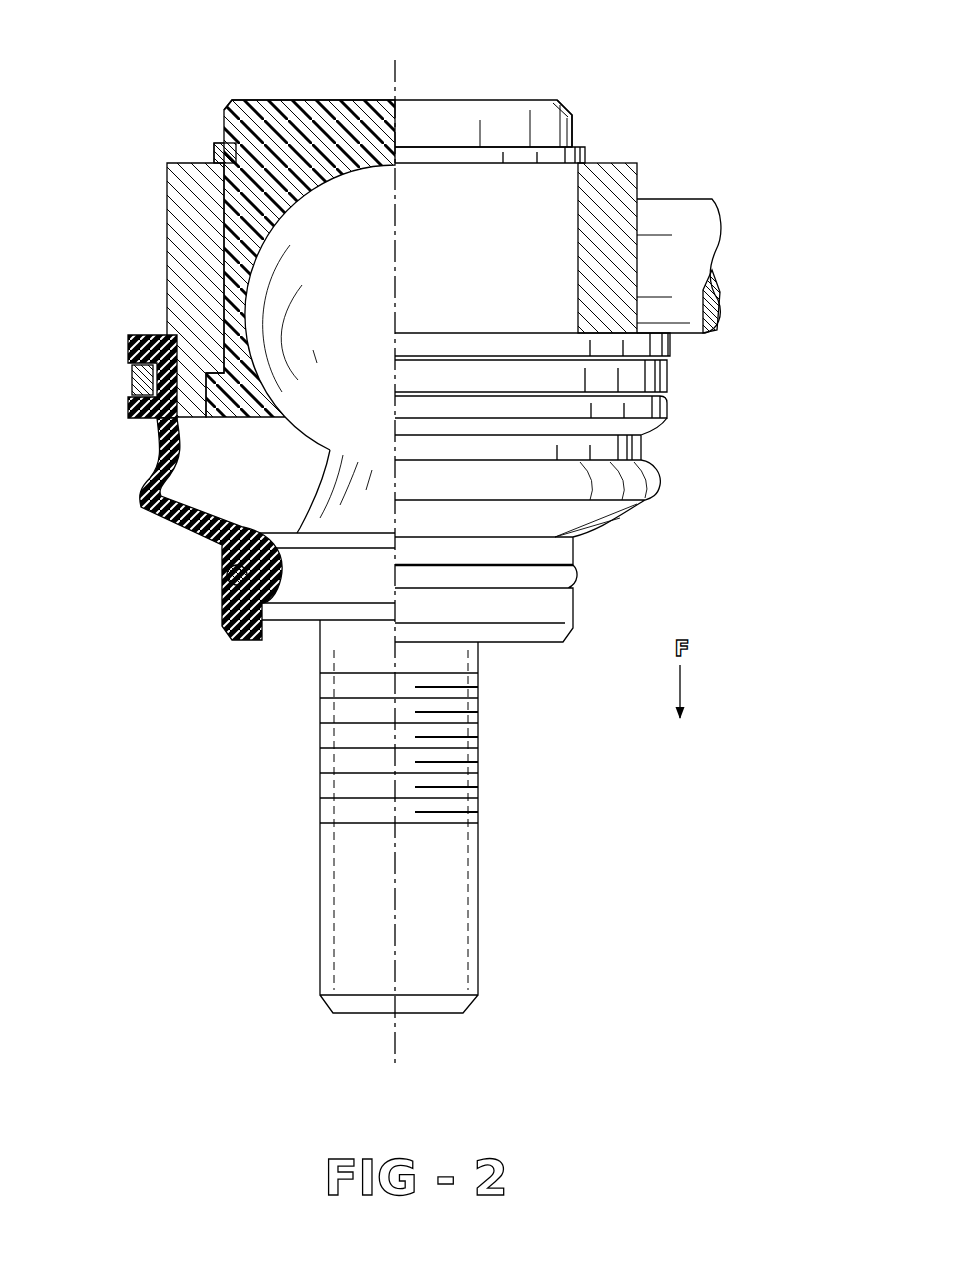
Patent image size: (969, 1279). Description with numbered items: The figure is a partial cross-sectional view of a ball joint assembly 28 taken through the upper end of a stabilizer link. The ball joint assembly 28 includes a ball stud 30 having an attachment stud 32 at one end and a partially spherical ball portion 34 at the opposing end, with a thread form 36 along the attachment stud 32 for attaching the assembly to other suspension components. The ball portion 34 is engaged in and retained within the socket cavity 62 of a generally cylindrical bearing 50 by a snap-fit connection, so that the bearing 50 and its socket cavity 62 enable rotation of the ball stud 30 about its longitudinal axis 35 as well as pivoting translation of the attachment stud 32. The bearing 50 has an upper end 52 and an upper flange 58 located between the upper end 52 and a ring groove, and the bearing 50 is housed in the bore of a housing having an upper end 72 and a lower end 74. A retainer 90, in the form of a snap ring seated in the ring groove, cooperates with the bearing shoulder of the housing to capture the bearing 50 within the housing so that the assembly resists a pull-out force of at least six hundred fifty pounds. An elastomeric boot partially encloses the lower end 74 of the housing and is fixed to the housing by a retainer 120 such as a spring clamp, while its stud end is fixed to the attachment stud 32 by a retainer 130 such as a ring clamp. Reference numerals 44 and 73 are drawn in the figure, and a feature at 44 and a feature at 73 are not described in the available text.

The ball joint assembly 28 is at (556, 75).
The ball stud 30 is at (303, 508).
The attachment stud 32 is at (425, 900).
The ball portion 34 is at (358, 187).
The longitudinal axis 35 is at (395, 1033).
The thread form 36 is at (472, 842).
The housing 44 is at (343, 100).
The bearing 50 is at (222, 123).
The upper end 52 is at (523, 100).
The upper flange 58 is at (575, 128).
The socket cavity 62 is at (260, 247).
The upper end 72 is at (210, 156).
The shoulder 73 is at (340, 590).
The lower end 74 is at (178, 420).
The retainer 90 is at (212, 150).
The retainer 120 is at (128, 376).
The retainer 130 is at (222, 573).